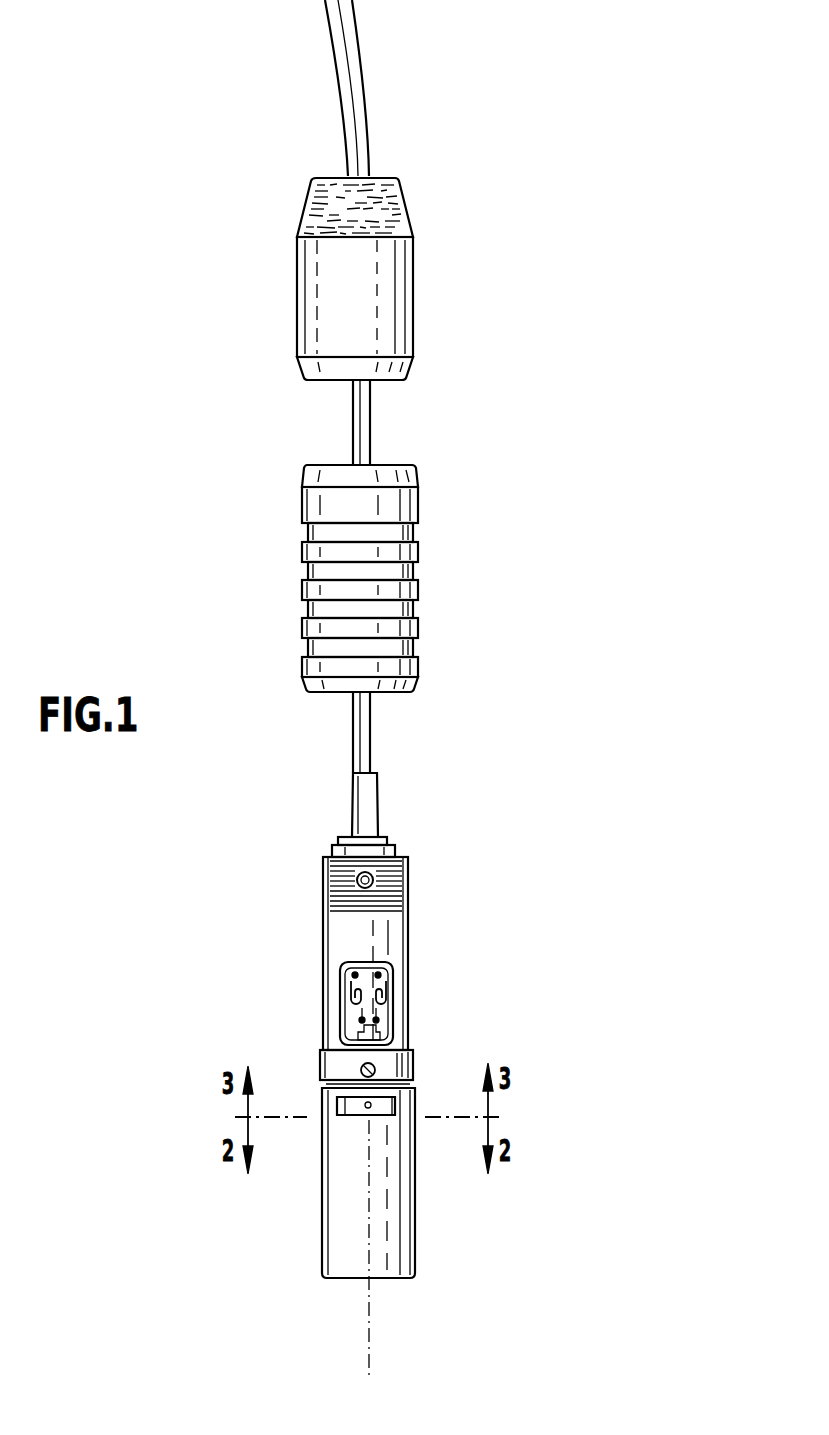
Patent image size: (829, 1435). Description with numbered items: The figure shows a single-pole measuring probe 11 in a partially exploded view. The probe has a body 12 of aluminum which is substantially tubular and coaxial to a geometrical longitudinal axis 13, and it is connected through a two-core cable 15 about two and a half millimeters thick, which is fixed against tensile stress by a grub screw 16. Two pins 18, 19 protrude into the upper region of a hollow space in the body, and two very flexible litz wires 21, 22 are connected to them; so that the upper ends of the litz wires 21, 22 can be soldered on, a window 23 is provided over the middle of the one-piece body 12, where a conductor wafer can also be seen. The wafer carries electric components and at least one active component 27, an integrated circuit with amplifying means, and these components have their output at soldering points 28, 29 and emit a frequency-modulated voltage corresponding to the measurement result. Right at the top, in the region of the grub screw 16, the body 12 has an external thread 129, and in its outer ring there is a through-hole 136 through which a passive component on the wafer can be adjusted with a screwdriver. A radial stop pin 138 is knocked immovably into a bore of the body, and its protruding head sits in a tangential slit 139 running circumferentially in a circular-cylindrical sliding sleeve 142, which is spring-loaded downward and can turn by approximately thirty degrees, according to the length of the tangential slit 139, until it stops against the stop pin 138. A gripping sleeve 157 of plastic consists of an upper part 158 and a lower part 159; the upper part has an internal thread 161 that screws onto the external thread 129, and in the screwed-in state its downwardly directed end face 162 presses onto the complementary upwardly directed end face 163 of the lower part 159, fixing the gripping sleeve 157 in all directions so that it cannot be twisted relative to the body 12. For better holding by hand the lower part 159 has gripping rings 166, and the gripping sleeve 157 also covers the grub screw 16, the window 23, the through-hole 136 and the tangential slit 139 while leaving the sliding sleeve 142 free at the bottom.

The measuring probe 11 is at (575, 912).
The body 12 is at (462, 922).
The geometrical longitudinal axis 13 is at (415, 1350).
The two-core cable 15 is at (440, 427).
The grub screw 16 is at (355, 886).
The pin 18 is at (352, 973).
The pin 19 is at (462, 960).
The litz wire 21 is at (358, 995).
The litz wire 22 is at (462, 995).
The window 23 is at (445, 1050).
The active component 27 is at (365, 1068).
The soldering point 28 is at (362, 1020).
The soldering point 29 is at (462, 1028).
The external thread 129 is at (462, 858).
The through-hole 136 is at (430, 1075).
The stop pin 138 is at (305, 1145).
The tangential slit 139 is at (430, 1142).
The sliding sleeve 142 is at (345, 1257).
The gripping sleeve 157 is at (168, 434).
The upper part 158 is at (462, 278).
The lower part 159 is at (468, 510).
The internal thread 161 is at (465, 205).
The end face 162 is at (318, 378).
The end face 163 is at (320, 465).
The gripping rings 166 is at (302, 630).